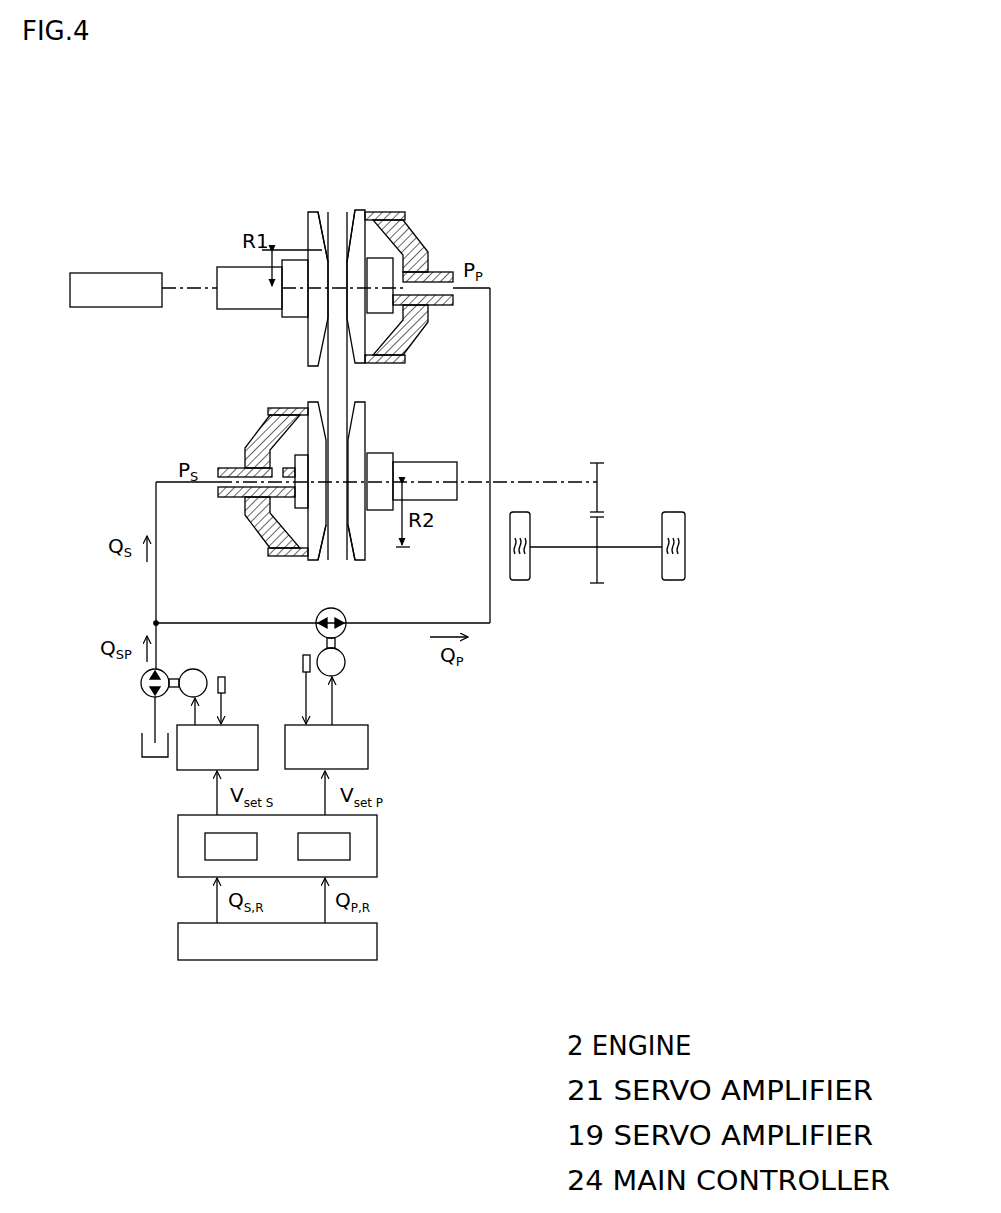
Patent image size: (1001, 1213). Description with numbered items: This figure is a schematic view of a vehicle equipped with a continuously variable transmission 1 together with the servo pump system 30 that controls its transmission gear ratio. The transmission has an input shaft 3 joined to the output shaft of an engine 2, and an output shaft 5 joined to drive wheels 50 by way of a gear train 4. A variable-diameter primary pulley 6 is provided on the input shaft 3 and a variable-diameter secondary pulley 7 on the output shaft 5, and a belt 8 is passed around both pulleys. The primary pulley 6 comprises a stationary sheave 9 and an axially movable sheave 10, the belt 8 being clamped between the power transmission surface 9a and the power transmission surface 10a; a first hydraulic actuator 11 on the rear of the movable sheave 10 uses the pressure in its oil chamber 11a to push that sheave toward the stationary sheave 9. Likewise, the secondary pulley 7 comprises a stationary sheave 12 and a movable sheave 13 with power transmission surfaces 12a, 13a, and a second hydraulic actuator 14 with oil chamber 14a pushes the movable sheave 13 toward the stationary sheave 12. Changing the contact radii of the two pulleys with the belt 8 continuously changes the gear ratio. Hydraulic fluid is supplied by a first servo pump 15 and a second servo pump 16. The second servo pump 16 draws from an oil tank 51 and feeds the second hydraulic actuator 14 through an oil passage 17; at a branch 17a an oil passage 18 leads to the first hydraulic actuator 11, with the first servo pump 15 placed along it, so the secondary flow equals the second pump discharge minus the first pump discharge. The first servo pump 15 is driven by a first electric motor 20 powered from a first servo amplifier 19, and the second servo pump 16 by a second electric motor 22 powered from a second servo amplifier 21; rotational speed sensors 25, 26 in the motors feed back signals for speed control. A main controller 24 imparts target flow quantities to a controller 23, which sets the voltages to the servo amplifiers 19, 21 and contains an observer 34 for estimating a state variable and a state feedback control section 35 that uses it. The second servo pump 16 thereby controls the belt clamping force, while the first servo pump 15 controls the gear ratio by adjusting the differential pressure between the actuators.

The continuously variable transmission 1 is at (417, 264).
The engine 2 is at (92, 272).
The input shaft 3 is at (222, 267).
The gear train 4 is at (597, 470).
The output shaft 5 is at (437, 462).
The primary pulley 6 is at (323, 257).
The secondary pulley 7 is at (338, 502).
The belt 8 is at (328, 380).
The stationary sheave 9 is at (314, 212).
The power transmission surface 9a is at (324, 226).
The movable sheave 10 is at (365, 208).
The power transmission surface 10a is at (351, 222).
The first hydraulic actuator 11 is at (409, 264).
The oil chamber 11a is at (393, 212).
The stationary sheave 12 is at (362, 564).
The power transmission surface 12a is at (350, 563).
The movable sheave 13 is at (300, 566).
The power transmission surface 13a is at (318, 563).
The second hydraulic actuator 14 is at (250, 470).
The oil chamber 14a is at (283, 440).
The first servo pump 15 is at (345, 632).
The second servo pump 16 is at (143, 697).
The oil passage 17 is at (157, 570).
The branch 17a is at (156, 623).
The oil passage 18 is at (268, 623).
The first servo amplifier 19 is at (360, 725).
The first electric motor 20 is at (345, 667).
The second servo amplifier 21 is at (250, 725).
The second electric motor 22 is at (193, 669).
The controller 23 is at (286, 824).
The main controller 24 is at (377, 940).
The rotational speed sensor 25 is at (303, 667).
The rotational speed sensor 26 is at (222, 677).
The servo pump system 30 is at (405, 705).
The observer 34 is at (205, 848).
The state feedback control section 35 is at (350, 850).
The drive wheels 50 is at (520, 580).
The oil tank 51 is at (138, 745).